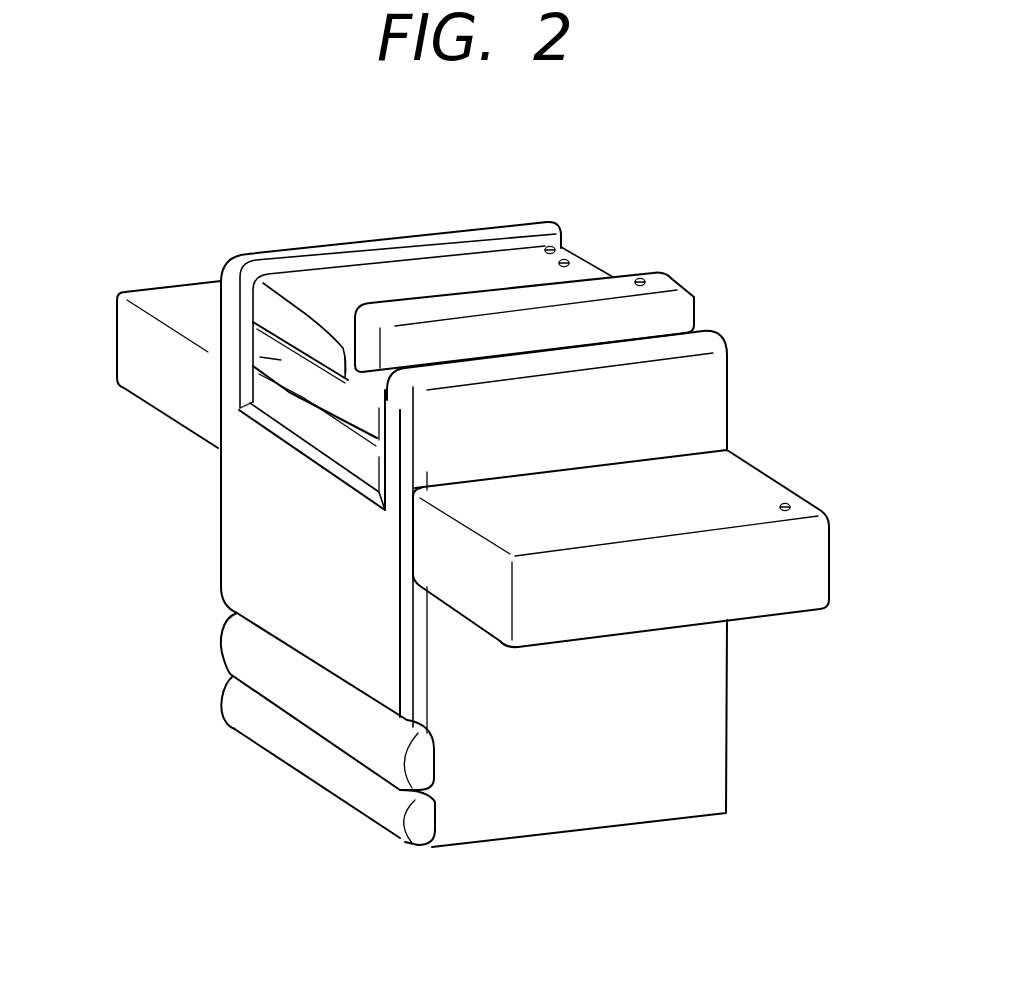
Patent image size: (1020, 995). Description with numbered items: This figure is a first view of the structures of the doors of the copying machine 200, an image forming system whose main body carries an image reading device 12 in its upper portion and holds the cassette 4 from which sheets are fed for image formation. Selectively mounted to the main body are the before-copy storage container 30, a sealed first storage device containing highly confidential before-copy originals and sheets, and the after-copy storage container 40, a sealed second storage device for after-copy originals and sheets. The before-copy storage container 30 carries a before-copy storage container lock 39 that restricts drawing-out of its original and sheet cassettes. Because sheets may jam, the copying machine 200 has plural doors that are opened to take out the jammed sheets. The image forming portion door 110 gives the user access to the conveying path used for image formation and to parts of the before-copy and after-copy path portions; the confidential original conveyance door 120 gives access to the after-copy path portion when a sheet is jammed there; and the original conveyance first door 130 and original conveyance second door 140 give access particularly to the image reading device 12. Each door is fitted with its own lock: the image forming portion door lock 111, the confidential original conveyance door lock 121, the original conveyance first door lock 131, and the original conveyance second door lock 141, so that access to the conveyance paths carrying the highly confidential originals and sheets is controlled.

The cassette 4 is at (420, 760).
The image reading device 12 is at (309, 424).
The before-copy storage container 30 is at (797, 593).
The before-copy storage container lock 39 is at (790, 503).
The after-copy storage container 40 is at (148, 370).
The image forming portion door 110 is at (235, 557).
The image forming portion door lock 111 is at (386, 676).
The confidential original conveyance door 120 is at (297, 325).
The confidential original conveyance door lock 121 is at (560, 246).
The original conveyance first door 130 is at (232, 307).
The original conveyance first door lock 131 is at (572, 258).
The original conveyance second door 140 is at (647, 320).
The original conveyance second door lock 141 is at (643, 278).
The copying machine 200 is at (679, 832).